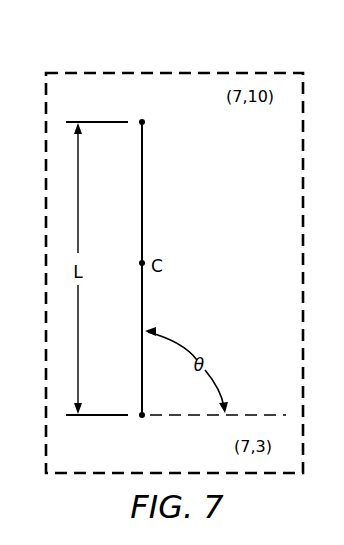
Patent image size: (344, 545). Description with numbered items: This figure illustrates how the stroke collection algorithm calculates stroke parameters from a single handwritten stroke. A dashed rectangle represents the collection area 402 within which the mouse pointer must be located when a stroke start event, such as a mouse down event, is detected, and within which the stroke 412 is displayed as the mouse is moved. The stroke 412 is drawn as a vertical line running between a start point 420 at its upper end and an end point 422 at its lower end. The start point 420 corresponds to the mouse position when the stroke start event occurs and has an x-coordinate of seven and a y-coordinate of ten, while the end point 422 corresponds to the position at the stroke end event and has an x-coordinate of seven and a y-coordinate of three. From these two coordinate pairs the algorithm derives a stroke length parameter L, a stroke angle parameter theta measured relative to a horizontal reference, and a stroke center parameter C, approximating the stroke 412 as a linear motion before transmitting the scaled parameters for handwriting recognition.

The collection area 402 is at (219, 72).
The stroke 412 is at (143, 331).
The start point 420 is at (144, 121).
The end point 422 is at (145, 419).